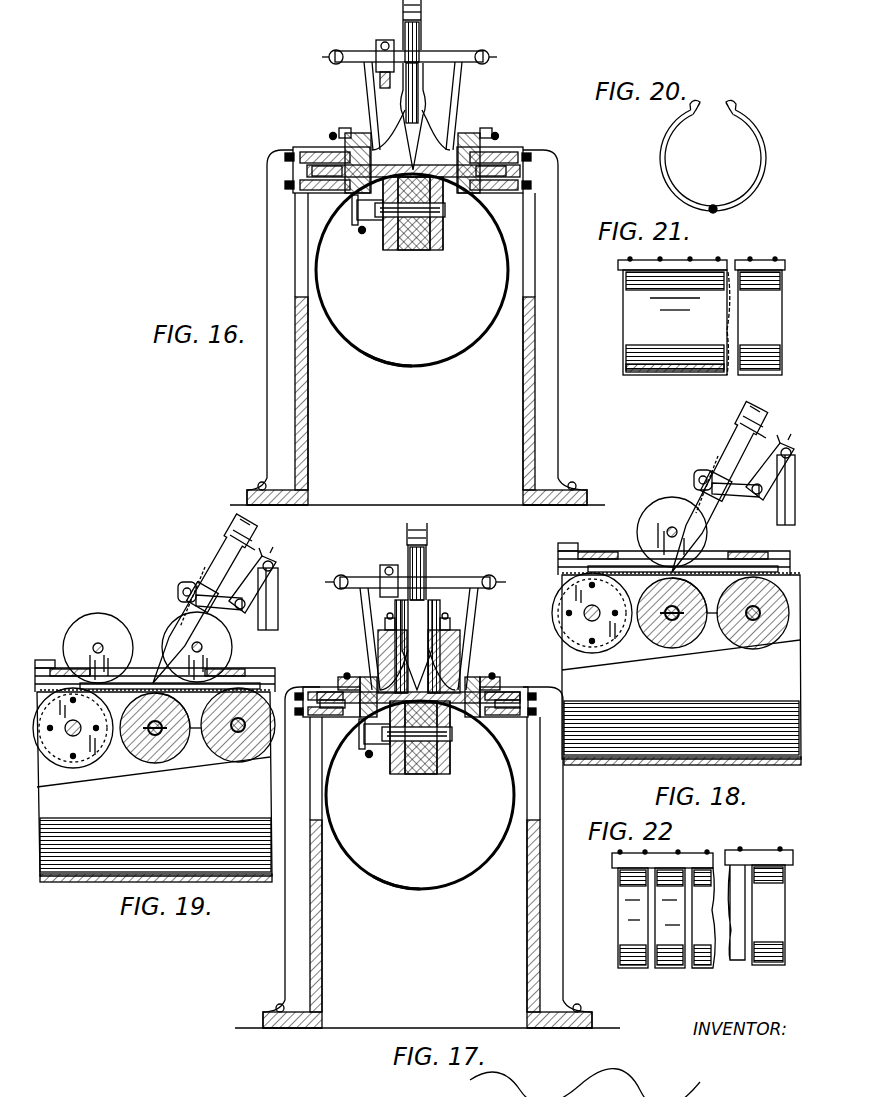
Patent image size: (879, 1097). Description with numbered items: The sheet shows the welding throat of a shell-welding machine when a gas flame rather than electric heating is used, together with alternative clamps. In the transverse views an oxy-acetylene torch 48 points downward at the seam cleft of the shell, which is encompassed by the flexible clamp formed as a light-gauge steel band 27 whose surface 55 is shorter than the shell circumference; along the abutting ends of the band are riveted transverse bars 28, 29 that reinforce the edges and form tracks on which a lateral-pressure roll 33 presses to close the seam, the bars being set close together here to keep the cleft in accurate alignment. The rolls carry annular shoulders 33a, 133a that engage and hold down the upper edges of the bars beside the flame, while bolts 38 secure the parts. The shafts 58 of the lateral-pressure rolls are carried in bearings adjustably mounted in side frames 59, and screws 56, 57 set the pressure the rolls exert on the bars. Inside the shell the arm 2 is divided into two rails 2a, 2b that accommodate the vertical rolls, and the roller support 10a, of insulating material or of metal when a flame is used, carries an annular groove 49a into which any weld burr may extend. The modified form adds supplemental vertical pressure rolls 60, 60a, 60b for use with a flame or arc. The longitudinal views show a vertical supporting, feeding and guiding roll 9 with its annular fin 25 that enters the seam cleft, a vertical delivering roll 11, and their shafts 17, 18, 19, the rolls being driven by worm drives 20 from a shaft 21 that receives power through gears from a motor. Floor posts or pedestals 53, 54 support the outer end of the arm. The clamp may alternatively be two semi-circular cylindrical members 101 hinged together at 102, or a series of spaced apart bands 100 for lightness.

In FIG. 19, the arm 2 is at (170, 764).
In FIG. 18, the arm 2 is at (668, 640).
In FIG. 16, the rail 2a is at (392, 252).
In FIG. 17, the rail 2a is at (398, 778).
In FIG. 16, the rail 2b is at (438, 252).
In FIG. 17, the rail 2b is at (446, 777).
In FIG. 19, the rail 2b is at (193, 752).
In FIG. 18, the rail 2b is at (698, 633).
In FIG. 19, the vertical supporting, feeding and guiding roll 9 is at (62, 767).
In FIG. 18, the vertical supporting, feeding and guiding roll 9 is at (592, 637).
In FIG. 16, the roller support 10a is at (413, 252).
In FIG. 17, the roller support 10a is at (430, 776).
In FIG. 19, the roller support 10a is at (154, 765).
In FIG. 18, the roller support 10a is at (664, 648).
In FIG. 19, the vertical delivering roll 11 is at (249, 760).
In FIG. 18, the vertical delivering roll 11 is at (753, 634).
In FIG. 19, the shaft 17 is at (80, 742).
In FIG. 18, the shaft 17 is at (558, 610).
In FIG. 16, the shaft 18 is at (441, 213).
In FIG. 17, the shaft 18 is at (450, 740).
In FIG. 19, the shaft 18 is at (146, 750).
In FIG. 18, the shaft 18 is at (676, 656).
In FIG. 19, the shaft 19 is at (232, 757).
In FIG. 18, the shaft 19 is at (759, 657).
In FIG. 16, the worm drive 20 is at (368, 222).
In FIG. 17, the worm drive 20 is at (375, 745).
In FIG. 16, the shaft 21 is at (360, 240).
In FIG. 17, the shaft 21 is at (366, 765).
In FIG. 19, the annular fin 25 is at (73, 767).
In FIG. 18, the annular fin 25 is at (593, 637).
In FIG. 16, the band 27 is at (492, 345).
In FIG. 17, the band 27 is at (470, 868).
In FIG. 19, the band 27 is at (45, 693).
In FIG. 18, the band 27 is at (679, 651).
In FIG. 16, the transverse bar 28 is at (383, 142).
In FIG. 17, the transverse bar 28 is at (385, 690).
In FIG. 19, the transverse bar 28 is at (80, 683).
In FIG. 18, the transverse bar 28 is at (683, 521).
In FIG. 16, the transverse bar 29 is at (428, 152).
In FIG. 17, the transverse bar 29 is at (440, 690).
In FIG. 16, the lateral-pressure roll 33 is at (305, 171).
In FIG. 17, the lateral-pressure roll 33 is at (335, 695).
In FIG. 16, the annular shoulder 33a is at (470, 150).
In FIG. 16, the annular shoulder 133a is at (357, 132).
In FIG. 16, the bolt 38 is at (330, 136).
In FIG. 17, the bolt 38 is at (345, 678).
In FIG. 16, the oxy-acetylene torch 48 is at (425, 118).
In FIG. 17, the oxy-acetylene torch 48 is at (428, 580).
In FIG. 19, the oxy-acetylene torch 48 is at (211, 582).
In FIG. 18, the oxy-acetylene torch 48 is at (733, 487).
In FIG. 16, the annular groove 49a is at (408, 258).
In FIG. 17, the annular groove 49a is at (412, 780).
In FIG. 19, the annular groove 49a is at (206, 764).
In FIG. 18, the annular groove 49a is at (704, 639).
In FIG. 16, the floor post 53 is at (558, 352).
In FIG. 17, the floor post 53 is at (563, 931).
In FIG. 16, the floor post 54 is at (267, 270).
In FIG. 17, the floor post 54 is at (285, 972).
In FIG. 16, the drum surface 55 is at (375, 366).
In FIG. 17, the drum surface 55 is at (385, 882).
In FIG. 19, the drum surface 55 is at (82, 876).
In FIG. 18, the drum surface 55 is at (682, 775).
In FIG. 16, the screw 56 is at (293, 153).
In FIG. 17, the screw 56 is at (305, 700).
In FIG. 16, the screw 57 is at (288, 186).
In FIG. 17, the screw 57 is at (303, 715).
In FIG. 16, the shaft 58 is at (355, 187).
In FIG. 17, the shaft 58 is at (365, 718).
In FIG. 16, the side frame 59 is at (335, 178).
In FIG. 17, the side frame 59 is at (508, 712).
In FIG. 19, the side frame 59 is at (58, 662).
In FIG. 18, the side frame 59 is at (560, 534).
In FIG. 17, the supplemental vertical pressure roll 60 is at (390, 630).
In FIG. 18, the supplemental vertical pressure roll 60 is at (672, 502).
In FIG. 19, the roller 60a is at (110, 632).
In FIG. 19, the roller 60b is at (233, 647).
In FIG. 22, the spaced apart band 100 is at (632, 970).
In FIG. 20, the semi-circular cylindrical member 101 is at (666, 158).
In FIG. 21, the semi-circular cylindrical member 101 is at (636, 312).
In FIG. 20, the hinge 102 is at (720, 211).
In FIG. 21, the hinge 102 is at (640, 374).